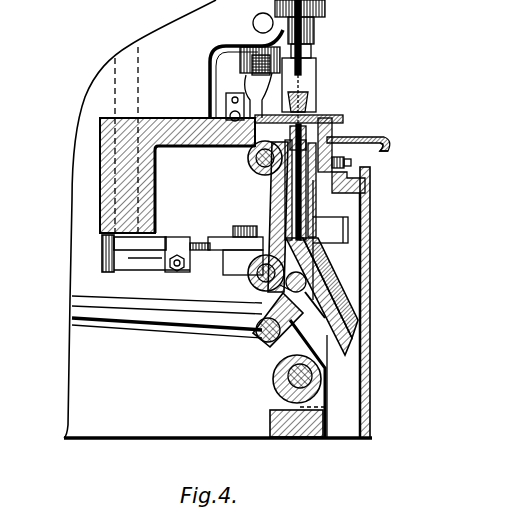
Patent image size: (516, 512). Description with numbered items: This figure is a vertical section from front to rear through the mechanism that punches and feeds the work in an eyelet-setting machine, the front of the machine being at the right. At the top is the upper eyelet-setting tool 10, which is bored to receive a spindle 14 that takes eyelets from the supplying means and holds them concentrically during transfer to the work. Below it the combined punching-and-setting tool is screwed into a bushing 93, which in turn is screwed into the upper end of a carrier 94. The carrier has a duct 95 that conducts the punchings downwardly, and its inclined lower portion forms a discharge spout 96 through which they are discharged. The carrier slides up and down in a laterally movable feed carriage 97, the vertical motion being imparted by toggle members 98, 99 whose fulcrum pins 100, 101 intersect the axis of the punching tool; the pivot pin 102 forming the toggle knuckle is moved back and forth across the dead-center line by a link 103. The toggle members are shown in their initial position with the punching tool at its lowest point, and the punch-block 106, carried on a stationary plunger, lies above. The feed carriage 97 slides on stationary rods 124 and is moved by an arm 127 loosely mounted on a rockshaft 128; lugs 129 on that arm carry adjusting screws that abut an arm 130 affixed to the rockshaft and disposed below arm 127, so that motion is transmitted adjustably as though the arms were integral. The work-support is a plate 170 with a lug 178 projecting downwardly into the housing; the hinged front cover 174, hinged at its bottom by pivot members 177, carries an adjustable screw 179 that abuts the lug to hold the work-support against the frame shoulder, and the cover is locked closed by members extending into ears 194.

The upper eyelet-setting tool 10 is at (316, 36).
The spindle 14 is at (308, 66).
The punch-block 106 is at (318, 108).
The bushing 93 is at (308, 138).
The duct 95 is at (291, 202).
The work-support plate 170 is at (371, 137).
The lug 178 is at (376, 139).
The adjustable screw 179 is at (352, 162).
The hinged front cover 174 is at (371, 386).
The ears 194 is at (333, 229).
The stationary rods 124 is at (250, 160).
The carrier 94 is at (280, 192).
The feed carriage 97 is at (277, 209).
The arm 127 is at (204, 242).
The lugs 129 is at (177, 243).
The rockshaft 128 is at (103, 203).
The arm 130 is at (100, 276).
The toggle member 98 is at (268, 296).
The fulcrum pin 100 is at (328, 272).
The discharge spout 96 is at (348, 296).
The link 103 is at (176, 333).
The pivot pin 102 is at (258, 365).
The toggle member 99 is at (276, 360).
The fulcrum pin 101 is at (276, 390).
The pivot members 177 is at (340, 442).